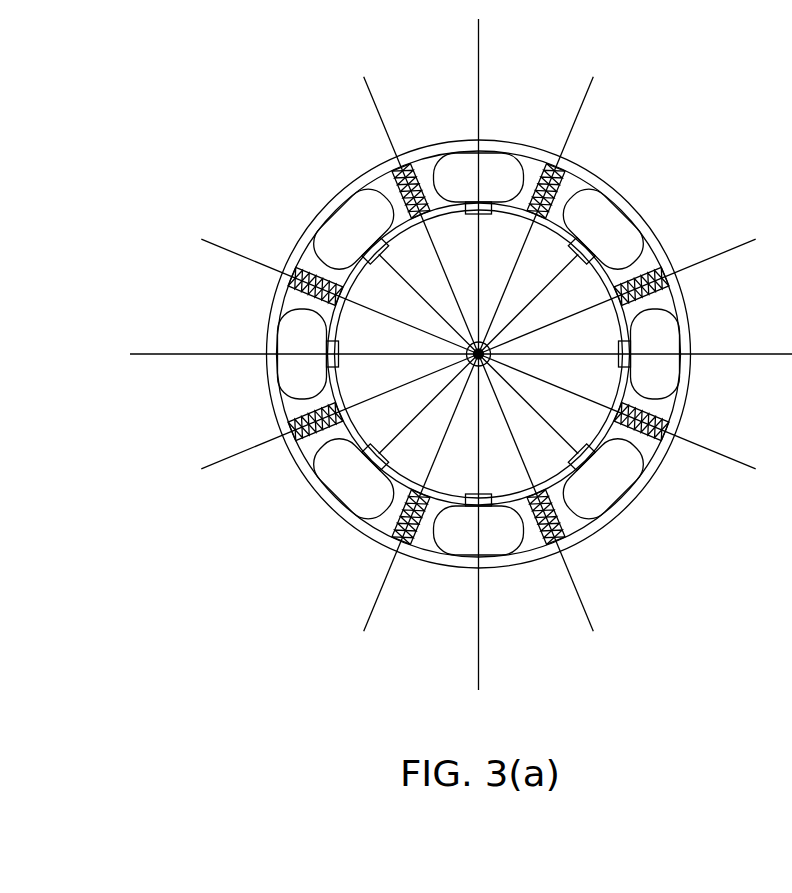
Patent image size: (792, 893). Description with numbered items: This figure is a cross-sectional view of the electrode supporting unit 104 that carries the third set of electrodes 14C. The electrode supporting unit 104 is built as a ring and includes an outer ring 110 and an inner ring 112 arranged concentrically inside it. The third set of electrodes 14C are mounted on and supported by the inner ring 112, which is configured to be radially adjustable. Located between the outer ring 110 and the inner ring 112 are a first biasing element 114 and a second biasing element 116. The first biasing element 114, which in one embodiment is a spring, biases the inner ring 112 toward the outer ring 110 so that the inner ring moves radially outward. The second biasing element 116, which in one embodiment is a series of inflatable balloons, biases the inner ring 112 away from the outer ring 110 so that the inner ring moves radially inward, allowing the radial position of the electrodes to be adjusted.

The electrode supporting unit 104 is at (268, 511).
The outer ring 110 is at (590, 178).
The inner ring 112 is at (684, 305).
The first biasing element 114 is at (320, 284).
The second biasing element 116 is at (358, 247).
The third set of electrodes 14C is at (323, 372).